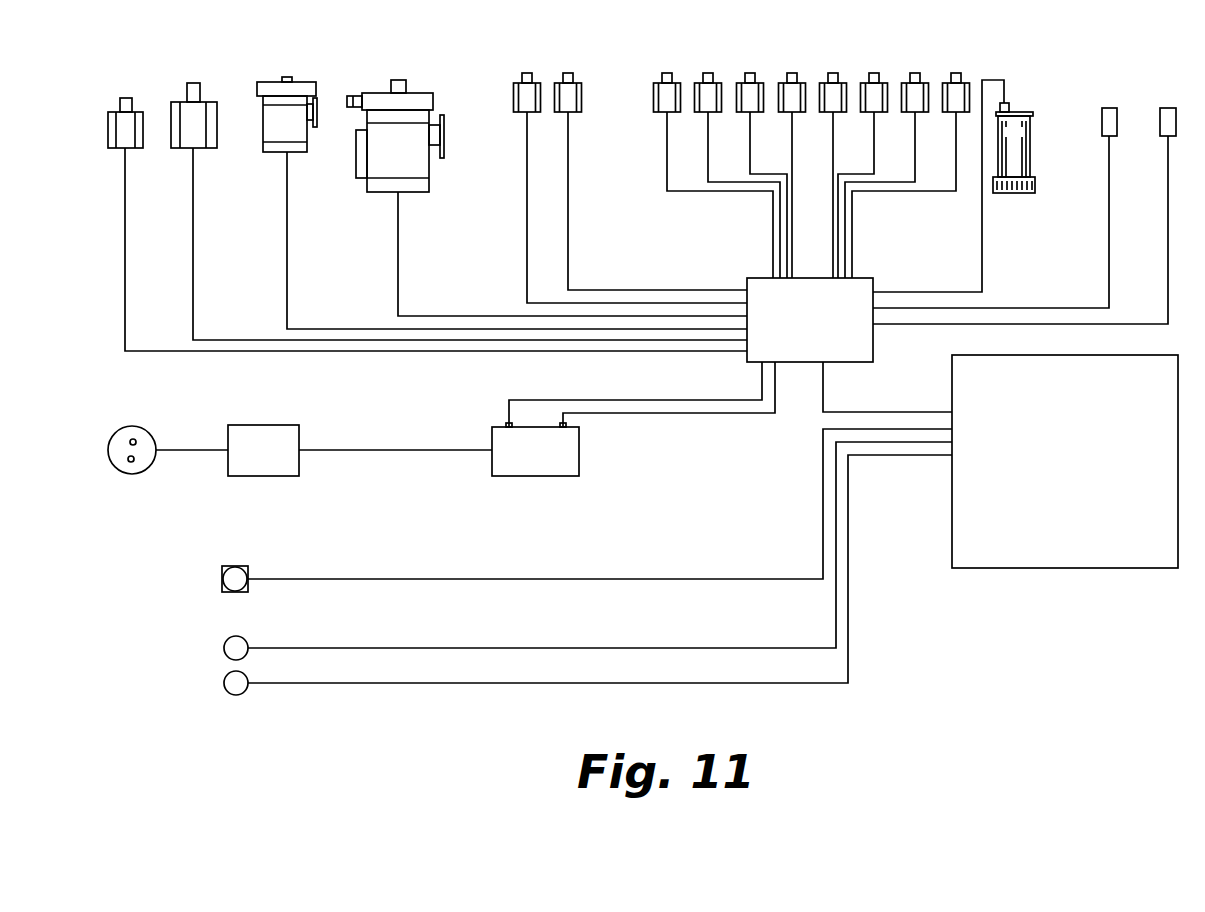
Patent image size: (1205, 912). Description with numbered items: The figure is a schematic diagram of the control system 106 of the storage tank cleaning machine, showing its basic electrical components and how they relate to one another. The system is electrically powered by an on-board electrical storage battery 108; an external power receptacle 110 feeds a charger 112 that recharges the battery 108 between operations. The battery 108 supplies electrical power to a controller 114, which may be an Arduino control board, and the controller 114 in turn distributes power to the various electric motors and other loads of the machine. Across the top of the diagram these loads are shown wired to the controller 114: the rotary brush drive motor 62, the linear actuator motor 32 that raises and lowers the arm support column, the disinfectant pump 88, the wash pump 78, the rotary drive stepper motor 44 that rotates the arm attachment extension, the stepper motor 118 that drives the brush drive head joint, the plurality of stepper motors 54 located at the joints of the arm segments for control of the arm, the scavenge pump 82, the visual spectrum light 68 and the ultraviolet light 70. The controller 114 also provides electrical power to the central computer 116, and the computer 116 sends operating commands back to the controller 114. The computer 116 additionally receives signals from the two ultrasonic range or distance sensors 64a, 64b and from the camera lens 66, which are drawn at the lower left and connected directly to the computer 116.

The linear actuator motor 32 is at (203, 100).
The rotary drive stepper motor 44 is at (513, 92).
The stepper motors 54 is at (717, 83).
The rotary brush drive motor 62 is at (133, 100).
The ultrasonic range sensor 64a is at (224, 644).
The ultrasonic range sensor 64b is at (224, 680).
The camera lens 66 is at (222, 572).
The visual spectrum light 68 is at (1109, 107).
The ultraviolet light 70 is at (1168, 108).
The wash pump 78 is at (418, 92).
The scavenge pump 82 is at (1032, 132).
The disinfectant pump 88 is at (301, 82).
The control system 106 is at (1004, 650).
The electrical storage battery 108 is at (513, 464).
The external power receptacle 110 is at (122, 428).
The charger 112 is at (241, 463).
The controller 114 is at (786, 333).
The central computer 116 is at (1046, 481).
The stepper motor 118 is at (575, 82).